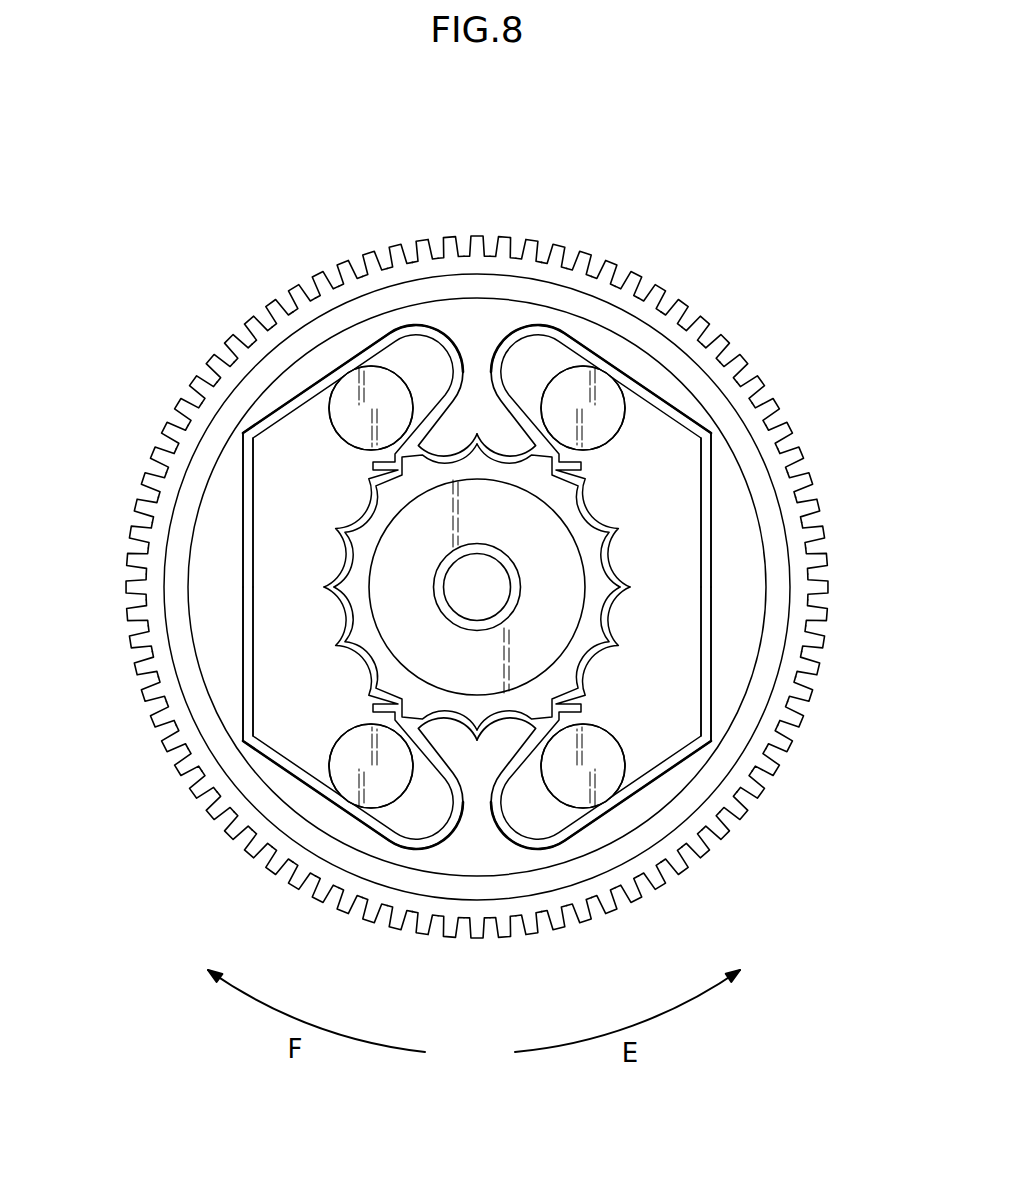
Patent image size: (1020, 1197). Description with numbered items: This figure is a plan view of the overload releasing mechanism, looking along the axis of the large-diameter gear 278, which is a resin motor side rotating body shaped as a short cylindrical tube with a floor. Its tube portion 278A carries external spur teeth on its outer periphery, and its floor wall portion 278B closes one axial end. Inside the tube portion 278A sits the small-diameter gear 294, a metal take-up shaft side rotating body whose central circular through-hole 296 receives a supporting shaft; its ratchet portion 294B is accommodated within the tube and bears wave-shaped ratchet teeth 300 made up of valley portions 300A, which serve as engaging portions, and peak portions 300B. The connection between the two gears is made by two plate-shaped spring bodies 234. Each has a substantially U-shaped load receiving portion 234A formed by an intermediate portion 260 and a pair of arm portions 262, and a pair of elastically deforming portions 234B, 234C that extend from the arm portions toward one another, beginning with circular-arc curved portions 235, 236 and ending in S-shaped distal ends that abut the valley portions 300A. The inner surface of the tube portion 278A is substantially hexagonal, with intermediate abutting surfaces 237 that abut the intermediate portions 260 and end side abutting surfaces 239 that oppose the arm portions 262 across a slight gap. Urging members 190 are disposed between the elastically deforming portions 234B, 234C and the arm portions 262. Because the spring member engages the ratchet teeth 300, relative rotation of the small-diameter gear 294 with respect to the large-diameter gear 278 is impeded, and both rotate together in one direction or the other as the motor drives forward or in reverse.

The urging member 190 is at (353, 403).
The spring body 234 is at (246, 572).
The load receiving portion 234A is at (357, 666).
The elastically deforming portion 234B is at (362, 400).
The elastically deforming portion 234C is at (517, 410).
The curved portion 235 is at (447, 407).
The curved portion 236 is at (505, 347).
The intermediate abutting surface 237 is at (247, 640).
The end side abutting surface 239 is at (328, 372).
The intermediate portion 260 is at (245, 600).
The arm portion 262 is at (358, 356).
The large-diameter gear 278 is at (804, 429).
The tube portion 278A is at (815, 478).
The floor wall portion 278B is at (680, 700).
The small-diameter gear 294 is at (368, 680).
The ratchet portion 294B is at (345, 765).
The through-hole 296 is at (457, 590).
The ratchet teeth 300 is at (615, 765).
The valley portion 300A is at (620, 498).
The peak portion 300B is at (588, 468).